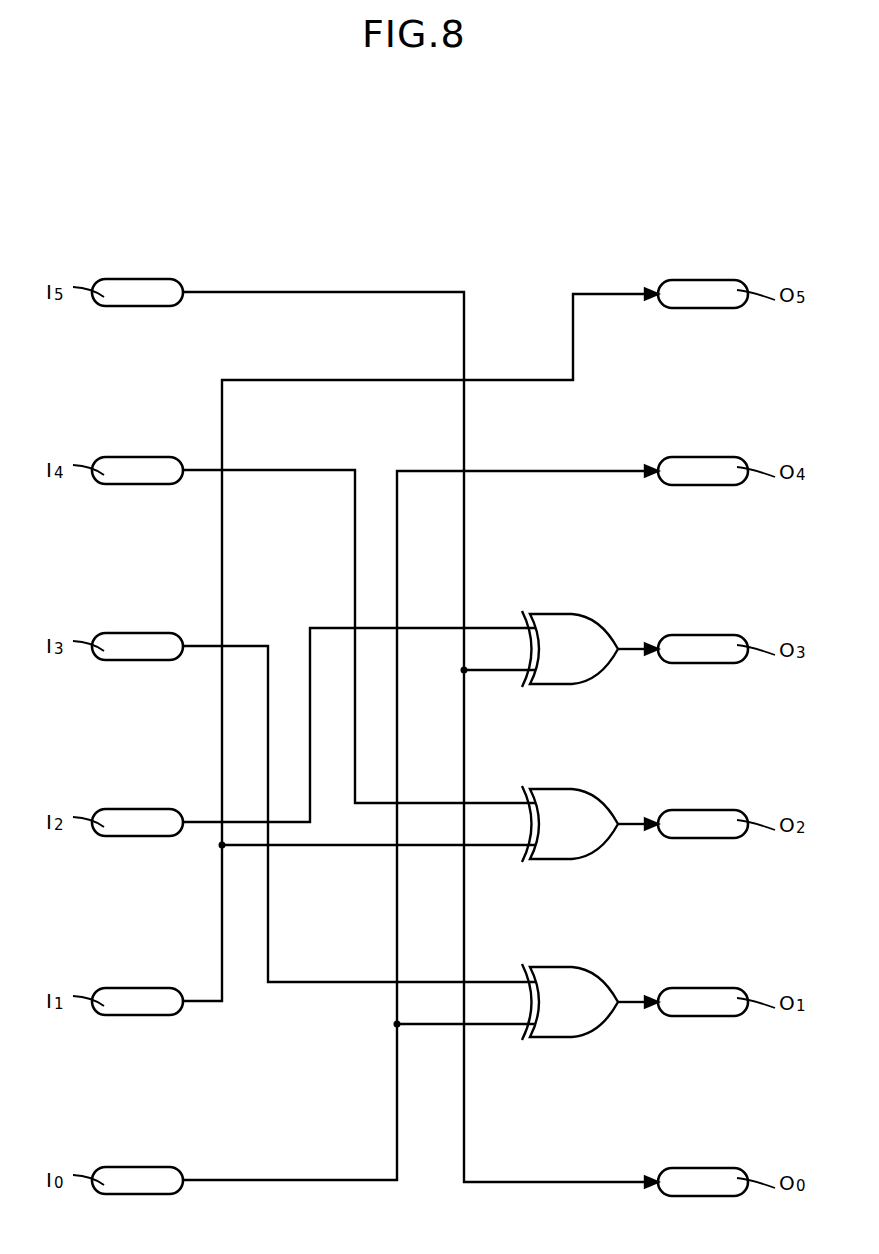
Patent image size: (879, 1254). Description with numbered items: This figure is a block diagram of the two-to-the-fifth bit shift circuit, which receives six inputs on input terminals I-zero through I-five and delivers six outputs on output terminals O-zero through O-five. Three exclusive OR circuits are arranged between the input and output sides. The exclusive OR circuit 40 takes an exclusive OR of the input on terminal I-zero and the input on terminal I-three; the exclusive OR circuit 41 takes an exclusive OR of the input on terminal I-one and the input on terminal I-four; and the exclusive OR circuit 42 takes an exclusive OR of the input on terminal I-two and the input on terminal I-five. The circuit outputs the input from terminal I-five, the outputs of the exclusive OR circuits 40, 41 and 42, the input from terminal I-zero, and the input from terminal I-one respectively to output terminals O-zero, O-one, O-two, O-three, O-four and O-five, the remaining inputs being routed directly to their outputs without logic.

The exclusive OR circuit 40 is at (577, 1004).
The exclusive OR circuit 41 is at (577, 826).
The exclusive OR circuit 42 is at (577, 651).